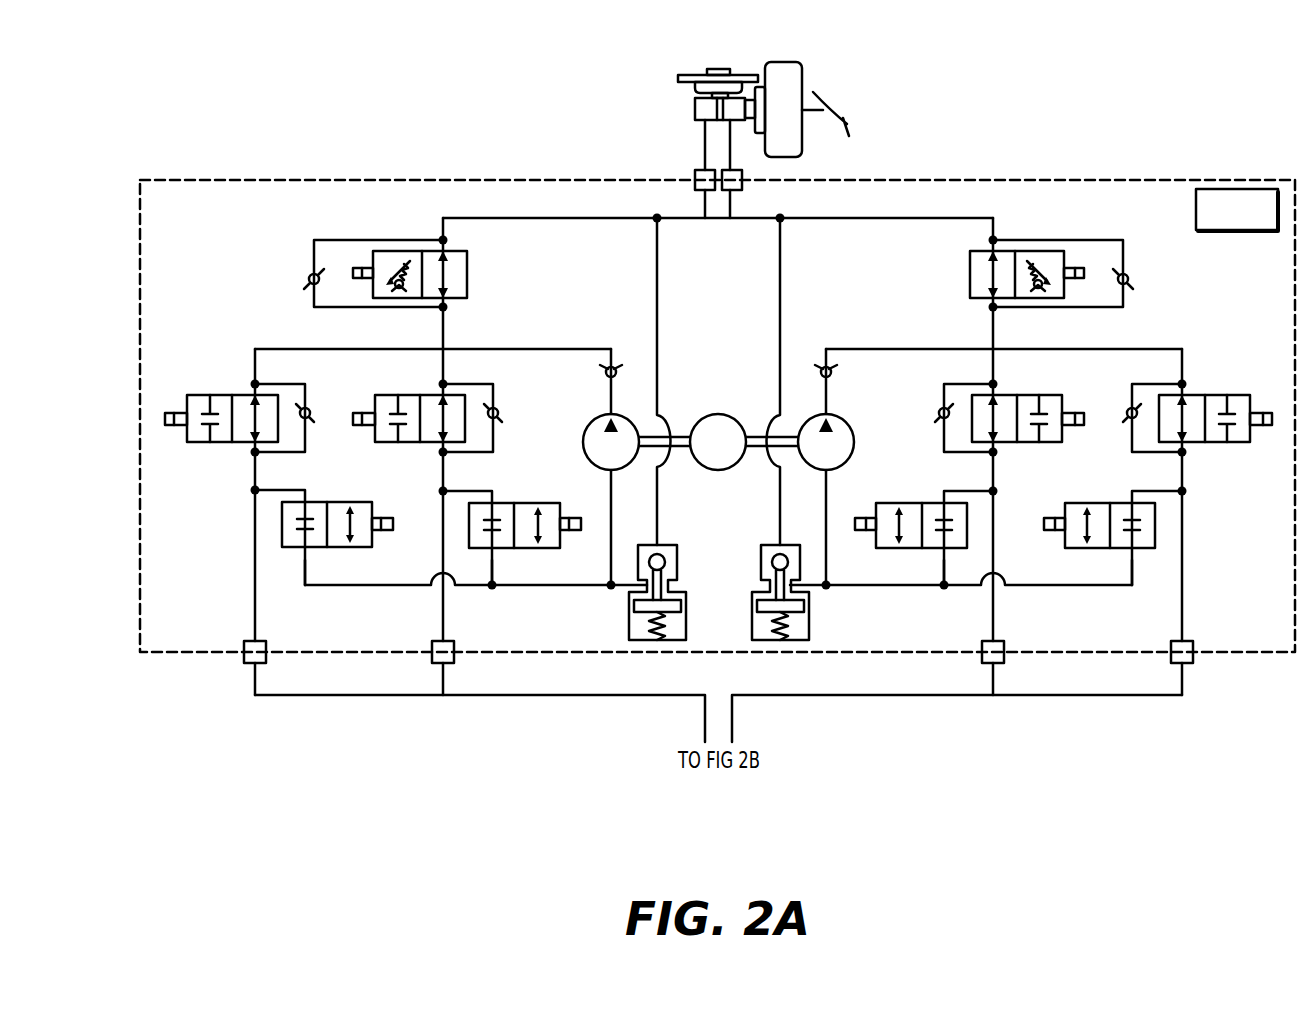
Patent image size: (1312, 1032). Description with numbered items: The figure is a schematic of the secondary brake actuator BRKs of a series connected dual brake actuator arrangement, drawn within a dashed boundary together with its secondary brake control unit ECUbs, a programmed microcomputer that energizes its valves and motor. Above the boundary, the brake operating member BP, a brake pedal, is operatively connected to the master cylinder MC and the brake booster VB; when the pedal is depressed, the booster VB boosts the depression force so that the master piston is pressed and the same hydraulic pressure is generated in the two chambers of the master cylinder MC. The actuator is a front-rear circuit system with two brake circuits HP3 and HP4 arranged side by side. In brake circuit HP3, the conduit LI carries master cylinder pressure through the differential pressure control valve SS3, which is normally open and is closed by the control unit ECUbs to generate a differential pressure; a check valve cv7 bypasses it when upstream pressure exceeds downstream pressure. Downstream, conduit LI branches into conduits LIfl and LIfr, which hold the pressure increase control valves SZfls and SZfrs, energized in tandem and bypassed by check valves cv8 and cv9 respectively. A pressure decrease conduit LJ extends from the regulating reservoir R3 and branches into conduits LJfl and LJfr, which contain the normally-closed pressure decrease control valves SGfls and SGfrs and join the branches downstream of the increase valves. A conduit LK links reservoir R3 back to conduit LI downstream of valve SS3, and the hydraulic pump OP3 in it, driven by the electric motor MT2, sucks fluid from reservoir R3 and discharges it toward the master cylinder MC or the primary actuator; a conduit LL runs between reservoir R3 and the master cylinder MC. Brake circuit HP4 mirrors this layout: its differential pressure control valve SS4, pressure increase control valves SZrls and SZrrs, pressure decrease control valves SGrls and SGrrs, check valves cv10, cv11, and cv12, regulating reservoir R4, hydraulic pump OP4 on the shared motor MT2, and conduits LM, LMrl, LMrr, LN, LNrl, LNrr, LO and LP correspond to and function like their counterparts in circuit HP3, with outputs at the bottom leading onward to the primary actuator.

The brake booster VB is at (795, 62).
The brake operating member BP is at (833, 117).
The master cylinder MC is at (695, 110).
The secondary brake actuator BRKs is at (1167, 180).
The secondary brake control unit ECUbs is at (1237, 210).
The brake circuit HP3 is at (247, 244).
The brake circuit HP4 is at (1191, 277).
The check valve cv7 is at (310, 274).
The check valve cv8 is at (310, 416).
The check valve cv9 is at (498, 416).
The check valve cv10 is at (1128, 274).
The check valve cv11 is at (938, 416).
The check valve cv12 is at (1127, 416).
The differential pressure control valve SS3 is at (467, 255).
The differential pressure control valve SS4 is at (970, 255).
The conduit LI is at (600, 219).
The conduit LM is at (837, 219).
The conduit LK is at (508, 348).
The conduit LO is at (929, 348).
The conduit LL is at (657, 335).
The conduit LP is at (780, 335).
The pressure increase control valve SZfls is at (240, 392).
The pressure increase control valve SZfrs is at (427, 392).
The pressure increase control valve SZrls is at (1000, 392).
The pressure increase control valve SZrrs is at (1215, 385).
The pressure decrease control valve SGfls is at (343, 505).
The pressure decrease control valve SGfrs is at (533, 505).
The pressure decrease control valve SGrls is at (897, 505).
The pressure decrease control valve SGrrs is at (1087, 505).
The hydraulic pump OP3 is at (636, 467).
The hydraulic pump OP4 is at (800, 467).
The electric motor MT2 is at (718, 442).
The conduit LJfl is at (305, 565).
The conduit LJfr is at (492, 565).
The conduit LNrl is at (944, 565).
The conduit LNrr is at (1132, 565).
The conduit LIfl is at (255, 618).
The conduit LIfr is at (443, 618).
The conduit LJ is at (505, 588).
The conduit LN is at (930, 588).
The conduit LMrl is at (993, 618).
The conduit LMrr is at (1182, 618).
The regulating reservoir R3 is at (629, 610).
The regulating reservoir R4 is at (806, 610).